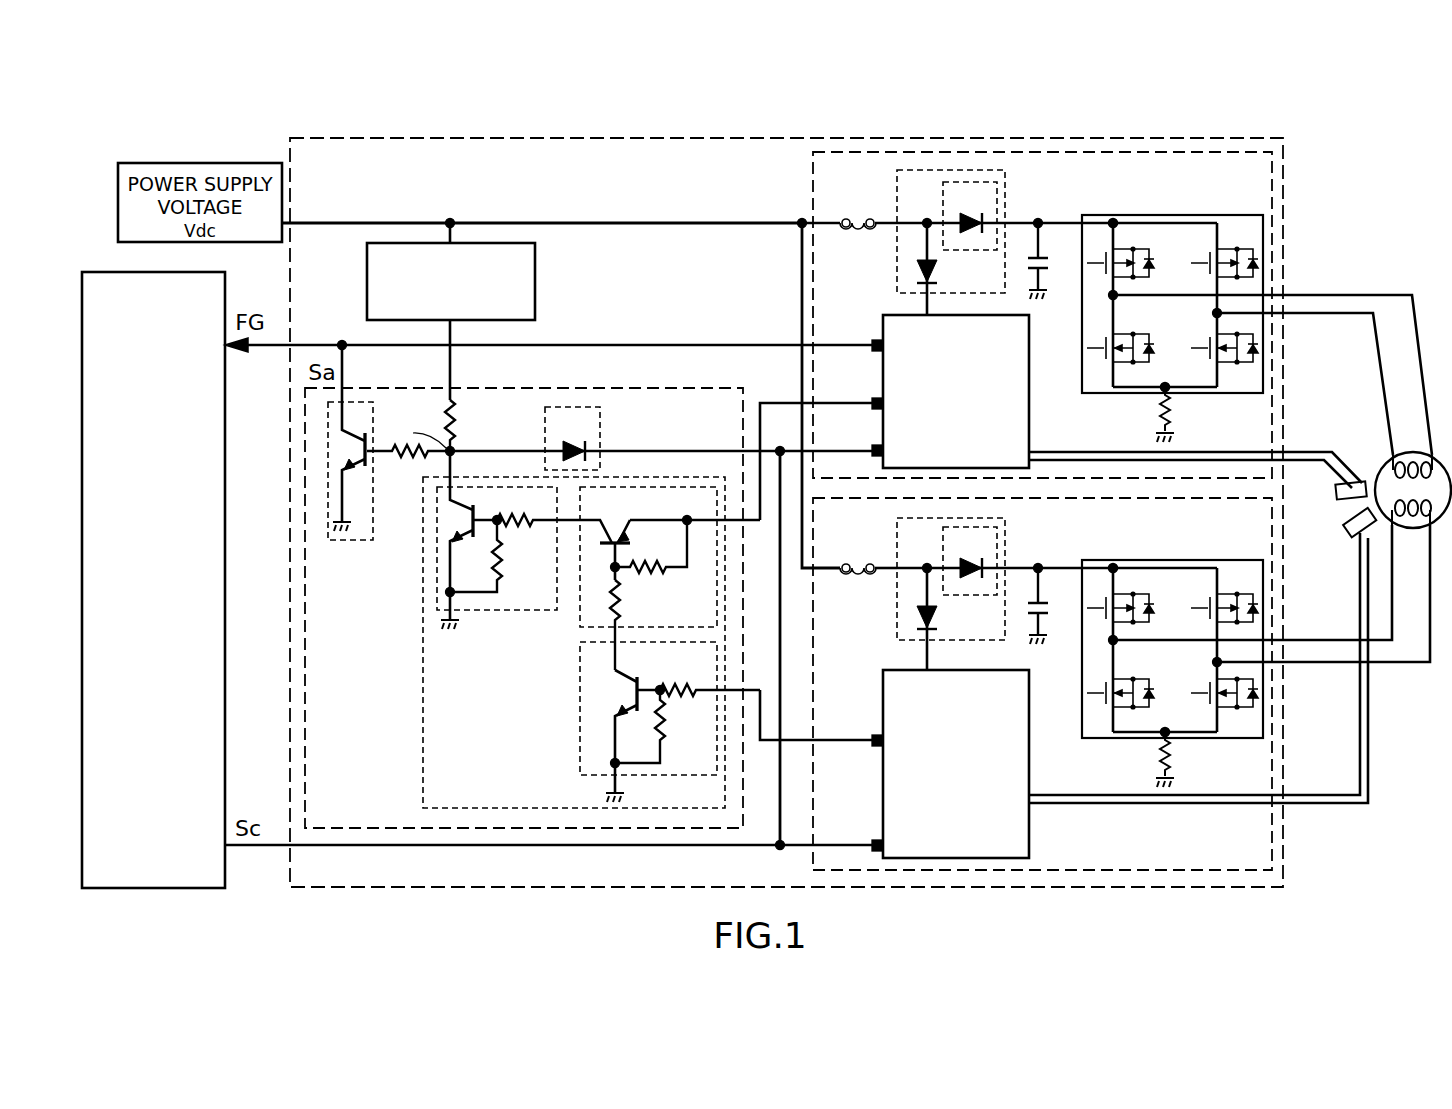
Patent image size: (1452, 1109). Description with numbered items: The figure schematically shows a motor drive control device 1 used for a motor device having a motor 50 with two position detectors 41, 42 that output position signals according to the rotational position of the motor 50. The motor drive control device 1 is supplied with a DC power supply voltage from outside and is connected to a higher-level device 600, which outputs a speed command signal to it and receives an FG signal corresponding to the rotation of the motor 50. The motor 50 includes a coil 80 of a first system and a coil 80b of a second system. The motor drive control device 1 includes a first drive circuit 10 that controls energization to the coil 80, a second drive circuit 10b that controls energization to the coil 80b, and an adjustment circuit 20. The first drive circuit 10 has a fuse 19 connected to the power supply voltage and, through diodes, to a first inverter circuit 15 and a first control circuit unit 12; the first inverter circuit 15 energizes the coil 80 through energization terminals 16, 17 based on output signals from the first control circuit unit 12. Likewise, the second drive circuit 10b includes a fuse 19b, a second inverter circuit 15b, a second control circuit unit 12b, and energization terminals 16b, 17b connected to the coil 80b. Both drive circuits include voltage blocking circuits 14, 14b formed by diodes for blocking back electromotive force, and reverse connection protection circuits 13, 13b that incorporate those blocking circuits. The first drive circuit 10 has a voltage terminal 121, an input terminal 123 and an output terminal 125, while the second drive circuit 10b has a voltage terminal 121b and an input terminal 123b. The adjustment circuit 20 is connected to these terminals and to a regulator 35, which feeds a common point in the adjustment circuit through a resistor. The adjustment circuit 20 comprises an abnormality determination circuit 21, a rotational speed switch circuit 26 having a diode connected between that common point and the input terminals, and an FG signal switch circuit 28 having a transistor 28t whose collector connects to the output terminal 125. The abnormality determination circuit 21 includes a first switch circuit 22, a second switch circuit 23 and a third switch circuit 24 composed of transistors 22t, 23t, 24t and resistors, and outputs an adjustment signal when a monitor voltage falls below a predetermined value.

The motor drive control device 1 is at (888, 136).
The first drive circuit 10 is at (1190, 150).
The second drive circuit 10b is at (1195, 872).
The first control circuit unit 12 is at (1032, 412).
The second control circuit unit 12b is at (1032, 750).
The reverse connection protection circuit 13 is at (893, 205).
The reverse connection protection circuit 13b is at (893, 548).
The voltage blocking circuit 14 is at (1002, 204).
The voltage blocking circuit 14b is at (1005, 545).
The first inverter circuit 15 is at (1265, 245).
The second inverter circuit 15b is at (1265, 720).
The energization terminal 16 is at (1118, 297).
The energization terminal 16b is at (1118, 642).
The energization terminal 17 is at (1222, 312).
The energization terminal 17b is at (1222, 663).
The fuse 19 is at (862, 230).
The fuse 19b is at (862, 576).
The adjustment circuit 20 is at (600, 386).
The abnormality determination circuit 21 is at (422, 722).
The first switch circuit 22 is at (580, 612).
The transistor 22t is at (622, 534).
The second switch circuit 23 is at (580, 692).
The transistor 23t is at (618, 700).
The third switch circuit 24 is at (497, 612).
The transistor 24t is at (455, 528).
The rotational speed switch circuit 26 is at (543, 430).
The FG signal switch circuit 28 is at (362, 542).
The transistor 28t is at (340, 456).
The regulator 35 is at (538, 272).
The position detector 41 is at (1336, 497).
The position detector 42 is at (1350, 535).
The motor 50 is at (1375, 422).
The coil of the first system 80 is at (1402, 468).
The coil of the second system 80b is at (1400, 506).
The voltage terminal 121 is at (875, 402).
The voltage terminal 121b is at (876, 739).
The input terminal 123 is at (875, 449).
The input terminal 123b is at (876, 843).
The output terminal 125 is at (875, 344).
The higher-level device 600 is at (115, 270).